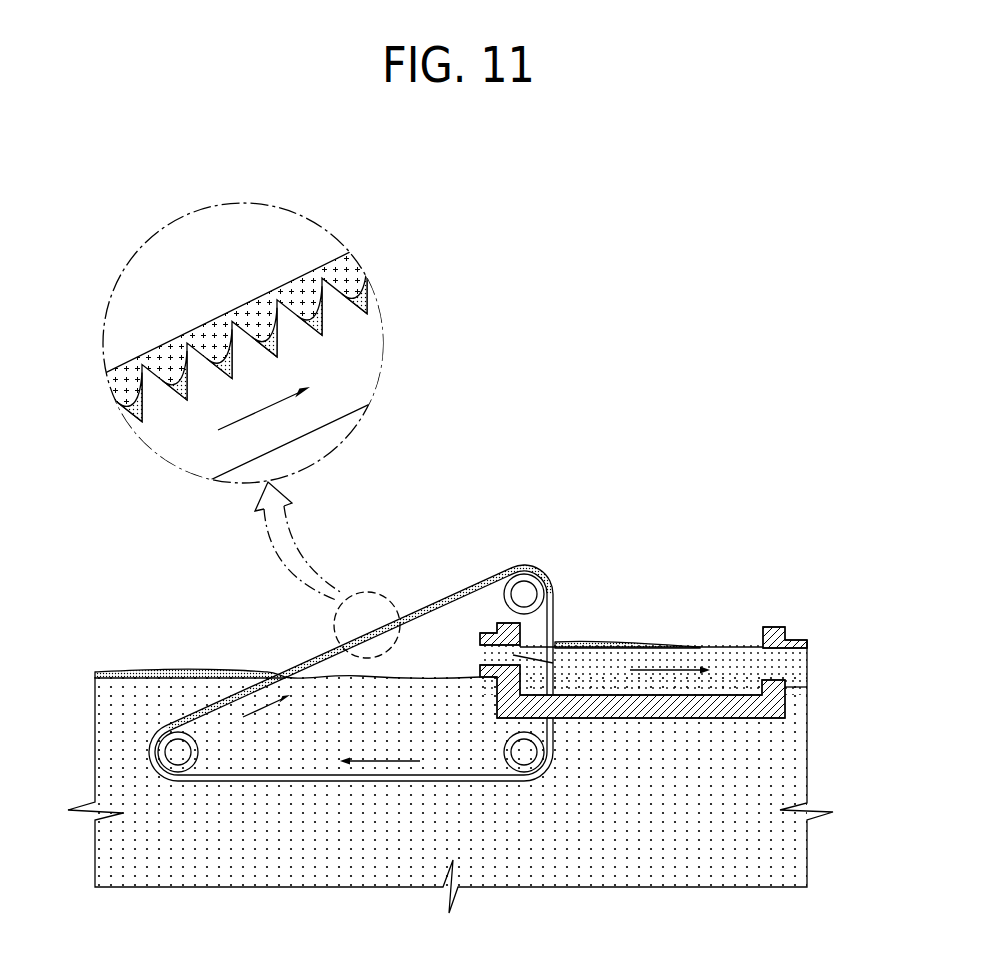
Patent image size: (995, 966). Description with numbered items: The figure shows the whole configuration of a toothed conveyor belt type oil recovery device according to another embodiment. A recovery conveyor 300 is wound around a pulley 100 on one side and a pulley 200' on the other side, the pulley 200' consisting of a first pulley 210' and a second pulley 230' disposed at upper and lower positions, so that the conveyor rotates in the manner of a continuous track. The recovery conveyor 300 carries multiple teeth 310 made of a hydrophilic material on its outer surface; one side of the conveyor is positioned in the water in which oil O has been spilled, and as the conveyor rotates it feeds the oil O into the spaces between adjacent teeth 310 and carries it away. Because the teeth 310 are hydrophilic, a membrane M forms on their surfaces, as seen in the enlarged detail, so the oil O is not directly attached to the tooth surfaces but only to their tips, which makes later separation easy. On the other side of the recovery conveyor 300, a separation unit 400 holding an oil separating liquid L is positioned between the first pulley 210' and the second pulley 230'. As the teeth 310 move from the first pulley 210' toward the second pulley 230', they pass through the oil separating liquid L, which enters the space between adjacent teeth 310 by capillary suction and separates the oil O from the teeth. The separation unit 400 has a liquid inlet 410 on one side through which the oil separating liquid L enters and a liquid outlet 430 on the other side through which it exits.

The pulley on one side 100 is at (168, 753).
The pulley on the other side 200' is at (351, 636).
The first pulley 210' is at (351, 636).
The second pulley 230' is at (351, 652).
The recovery conveyor 300 is at (328, 652).
The teeth 310 is at (285, 325).
The separation unit 400 is at (780, 703).
The liquid inlet 410 is at (553, 663).
The liquid outlet 430 is at (782, 667).
The oil O is at (143, 673).
The membrane M is at (177, 380).
The oil separating liquid L is at (737, 647).